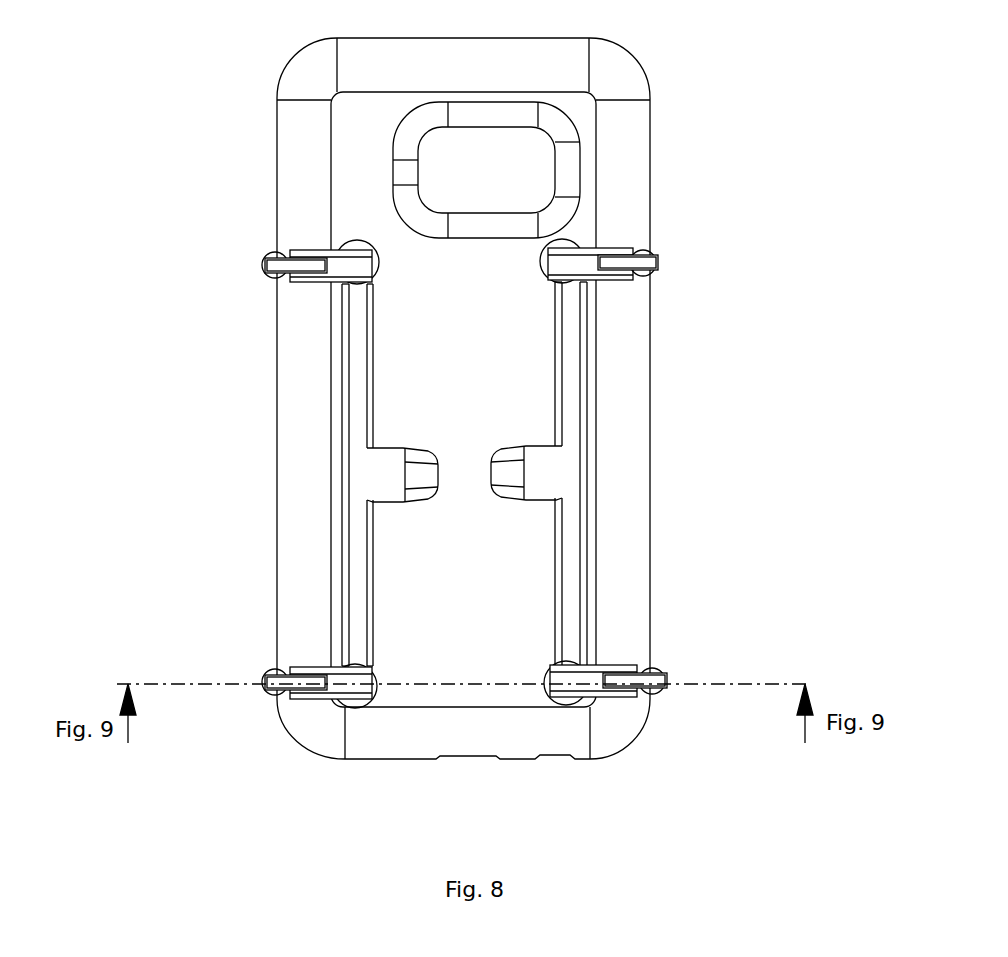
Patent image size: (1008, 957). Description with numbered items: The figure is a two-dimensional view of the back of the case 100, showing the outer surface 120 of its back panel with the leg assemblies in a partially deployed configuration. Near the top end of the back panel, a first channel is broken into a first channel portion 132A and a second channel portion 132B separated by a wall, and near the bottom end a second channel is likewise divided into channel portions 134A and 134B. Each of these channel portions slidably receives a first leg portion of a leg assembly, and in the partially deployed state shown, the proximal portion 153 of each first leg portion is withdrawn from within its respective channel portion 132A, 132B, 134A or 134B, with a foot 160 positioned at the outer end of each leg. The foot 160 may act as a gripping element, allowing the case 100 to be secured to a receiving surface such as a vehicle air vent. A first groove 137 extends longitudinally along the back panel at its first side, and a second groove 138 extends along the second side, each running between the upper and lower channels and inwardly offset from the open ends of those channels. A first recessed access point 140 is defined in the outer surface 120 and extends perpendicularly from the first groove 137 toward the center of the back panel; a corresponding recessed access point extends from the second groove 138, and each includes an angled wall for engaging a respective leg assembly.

The case 100 is at (708, 43).
The outer surface 120 is at (485, 394).
The first channel portion 132A is at (568, 243).
The second channel portion 132B is at (355, 242).
The first channel portion of second channel 134A is at (572, 703).
The second channel portion of second channel 134B is at (352, 705).
The first groove 137 is at (566, 403).
The second groove 138 is at (357, 403).
The first recessed access point 140 is at (388, 473).
The proximal portion 153 is at (353, 263).
The foot 160 is at (277, 268).